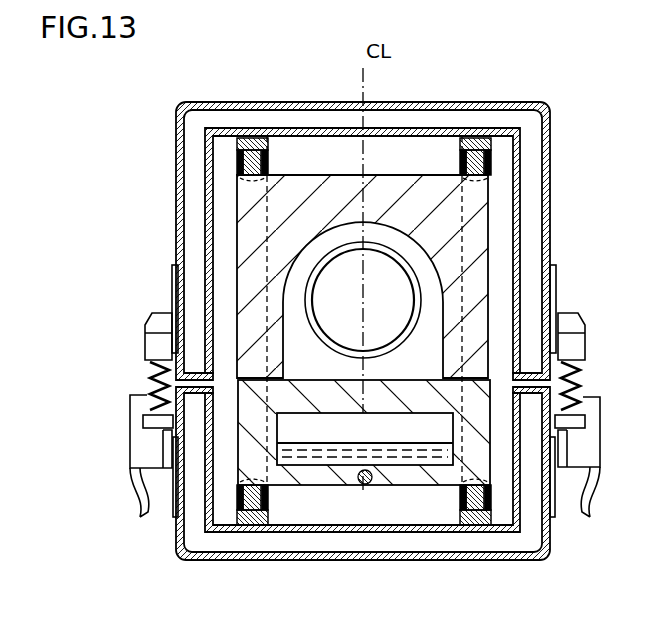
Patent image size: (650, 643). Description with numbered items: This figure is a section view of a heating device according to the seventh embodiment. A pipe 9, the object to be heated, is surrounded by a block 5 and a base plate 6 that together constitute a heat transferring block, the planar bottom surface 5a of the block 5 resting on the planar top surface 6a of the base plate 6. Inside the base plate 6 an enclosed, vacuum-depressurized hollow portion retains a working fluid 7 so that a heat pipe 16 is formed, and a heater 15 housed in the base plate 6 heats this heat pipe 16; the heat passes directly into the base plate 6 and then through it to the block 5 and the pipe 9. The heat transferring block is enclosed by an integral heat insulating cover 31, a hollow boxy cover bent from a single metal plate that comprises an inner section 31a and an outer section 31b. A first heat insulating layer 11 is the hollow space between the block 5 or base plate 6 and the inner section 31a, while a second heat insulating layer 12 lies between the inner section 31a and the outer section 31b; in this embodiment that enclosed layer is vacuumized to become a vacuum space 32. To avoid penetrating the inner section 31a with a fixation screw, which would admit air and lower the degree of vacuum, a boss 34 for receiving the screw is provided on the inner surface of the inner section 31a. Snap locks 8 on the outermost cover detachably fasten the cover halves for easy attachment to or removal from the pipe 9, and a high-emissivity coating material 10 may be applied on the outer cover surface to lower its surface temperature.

The block 5 is at (253, 193).
The bottom surface 5a is at (240, 430).
The base plate 6 is at (250, 457).
The top surface 6a is at (252, 448).
The working fluid 7 is at (322, 455).
The snap lock 8 is at (147, 440).
The pipe 9 is at (305, 300).
The coating material 10 is at (528, 101).
The first heat insulating layer 11 is at (223, 220).
The second heat insulating layer 12 is at (198, 247).
The heater 15 is at (360, 483).
The heat pipe 16 is at (292, 427).
The integral heat insulating cover 31 is at (548, 146).
The inner section 31a is at (518, 251).
The outer section 31b is at (548, 216).
The vacuum space 32 is at (528, 183).
The boss 34 is at (240, 150).